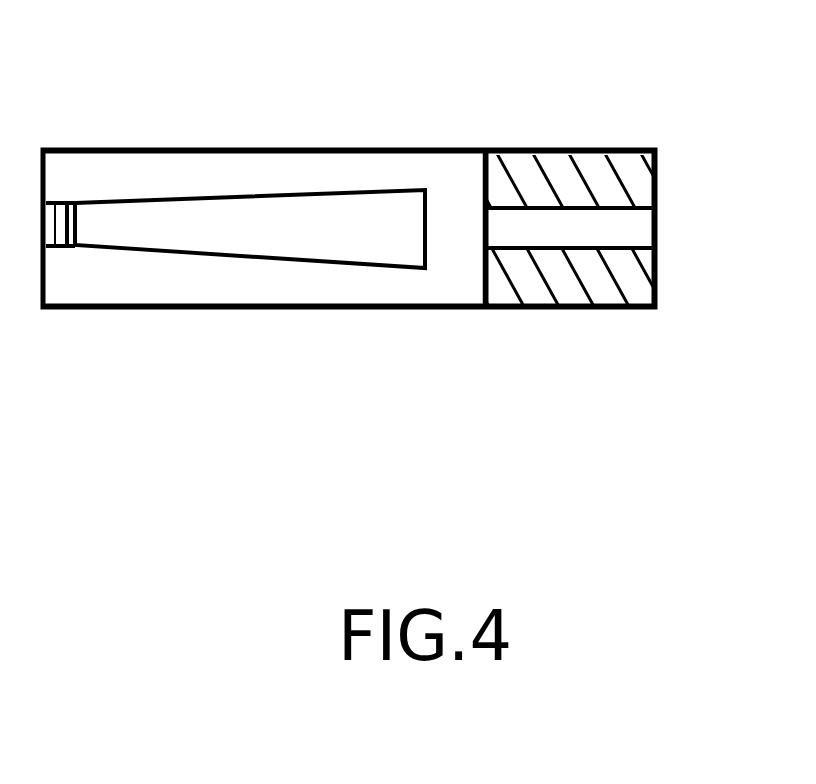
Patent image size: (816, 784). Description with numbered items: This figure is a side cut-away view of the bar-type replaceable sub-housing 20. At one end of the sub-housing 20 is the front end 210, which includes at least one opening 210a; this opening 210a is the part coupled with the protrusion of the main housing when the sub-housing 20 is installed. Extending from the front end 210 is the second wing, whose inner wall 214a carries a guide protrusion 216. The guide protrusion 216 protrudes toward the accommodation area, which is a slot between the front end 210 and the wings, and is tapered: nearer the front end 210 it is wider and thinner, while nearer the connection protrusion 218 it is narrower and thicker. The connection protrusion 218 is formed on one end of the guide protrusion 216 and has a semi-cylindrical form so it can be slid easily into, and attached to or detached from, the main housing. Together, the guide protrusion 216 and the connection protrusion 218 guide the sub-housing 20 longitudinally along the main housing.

The sub-housing 20 is at (461, 149).
The front end 210 is at (563, 170).
The opening 210a is at (640, 229).
The inner wall 214a is at (133, 178).
The guide protrusion 216 is at (253, 227).
The connection protrusion 218 is at (46, 214).